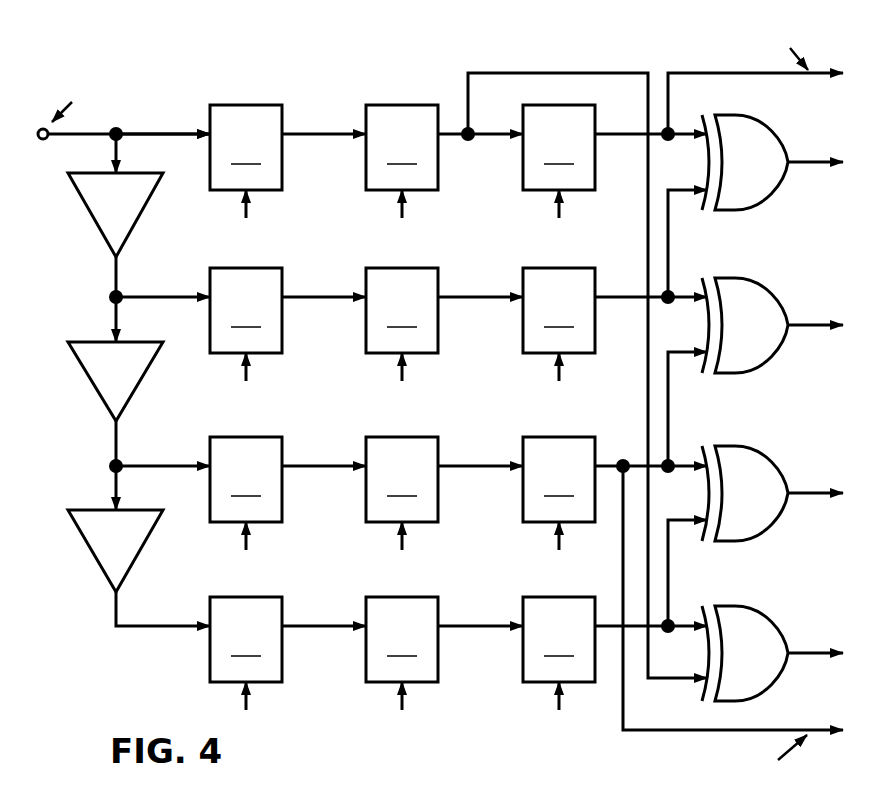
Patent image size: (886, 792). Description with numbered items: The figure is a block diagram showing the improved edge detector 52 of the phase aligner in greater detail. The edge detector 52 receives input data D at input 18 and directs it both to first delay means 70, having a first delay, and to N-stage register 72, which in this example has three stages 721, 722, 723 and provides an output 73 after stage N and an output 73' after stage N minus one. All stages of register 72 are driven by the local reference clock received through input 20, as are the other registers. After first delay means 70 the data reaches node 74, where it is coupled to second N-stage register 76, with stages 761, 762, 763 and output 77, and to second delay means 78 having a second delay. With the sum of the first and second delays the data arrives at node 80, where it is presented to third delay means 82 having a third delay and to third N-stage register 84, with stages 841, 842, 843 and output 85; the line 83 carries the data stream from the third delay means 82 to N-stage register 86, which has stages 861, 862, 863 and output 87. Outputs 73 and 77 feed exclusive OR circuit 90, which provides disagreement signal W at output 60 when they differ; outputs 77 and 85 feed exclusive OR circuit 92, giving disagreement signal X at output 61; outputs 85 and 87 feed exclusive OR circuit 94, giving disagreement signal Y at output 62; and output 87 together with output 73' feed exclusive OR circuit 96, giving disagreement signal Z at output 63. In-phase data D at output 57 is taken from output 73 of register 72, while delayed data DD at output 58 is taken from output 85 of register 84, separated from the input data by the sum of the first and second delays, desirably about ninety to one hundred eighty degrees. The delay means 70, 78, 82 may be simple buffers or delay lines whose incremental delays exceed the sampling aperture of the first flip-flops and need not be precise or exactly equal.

The edge detector 52 is at (233, 78).
The input 18 is at (43, 141).
The first delay means 70 is at (80, 198).
The N-stage register 72 is at (203, 120).
The stage 721 is at (246, 147).
The stage 722 is at (402, 147).
The stage 723 is at (559, 147).
The output 73' is at (572, 375).
The output 73 is at (651, 117).
The output 57 is at (772, 76).
The exclusive OR circuit 90 is at (741, 172).
The output 60 is at (806, 161).
The input 20 is at (397, 454).
The node 74 is at (111, 299).
The second N-stage register 76 is at (203, 284).
The stage 761 is at (246, 310).
The stage 762 is at (402, 310).
The stage 763 is at (559, 310).
The output 77 is at (673, 293).
The exclusive OR circuit 92 is at (741, 335).
The output 61 is at (808, 324).
The second delay means 78 is at (88, 378).
The node 80 is at (111, 468).
The third N-stage register 84 is at (203, 453).
The stage 841 is at (246, 479).
The stage 842 is at (402, 479).
The stage 843 is at (559, 479).
The output 85 is at (664, 462).
The exclusive OR circuit 94 is at (741, 503).
The output 62 is at (808, 492).
The third delay means 82 is at (87, 545).
The output line of delay element D3 83 is at (135, 632).
The N-stage register 86 is at (203, 612).
The stage 861 is at (246, 639).
The stage 862 is at (402, 639).
The stage 863 is at (559, 639).
The output 87 is at (672, 622).
The exclusive OR circuit 96 is at (741, 663).
The output 63 is at (806, 652).
The output 58 is at (762, 730).